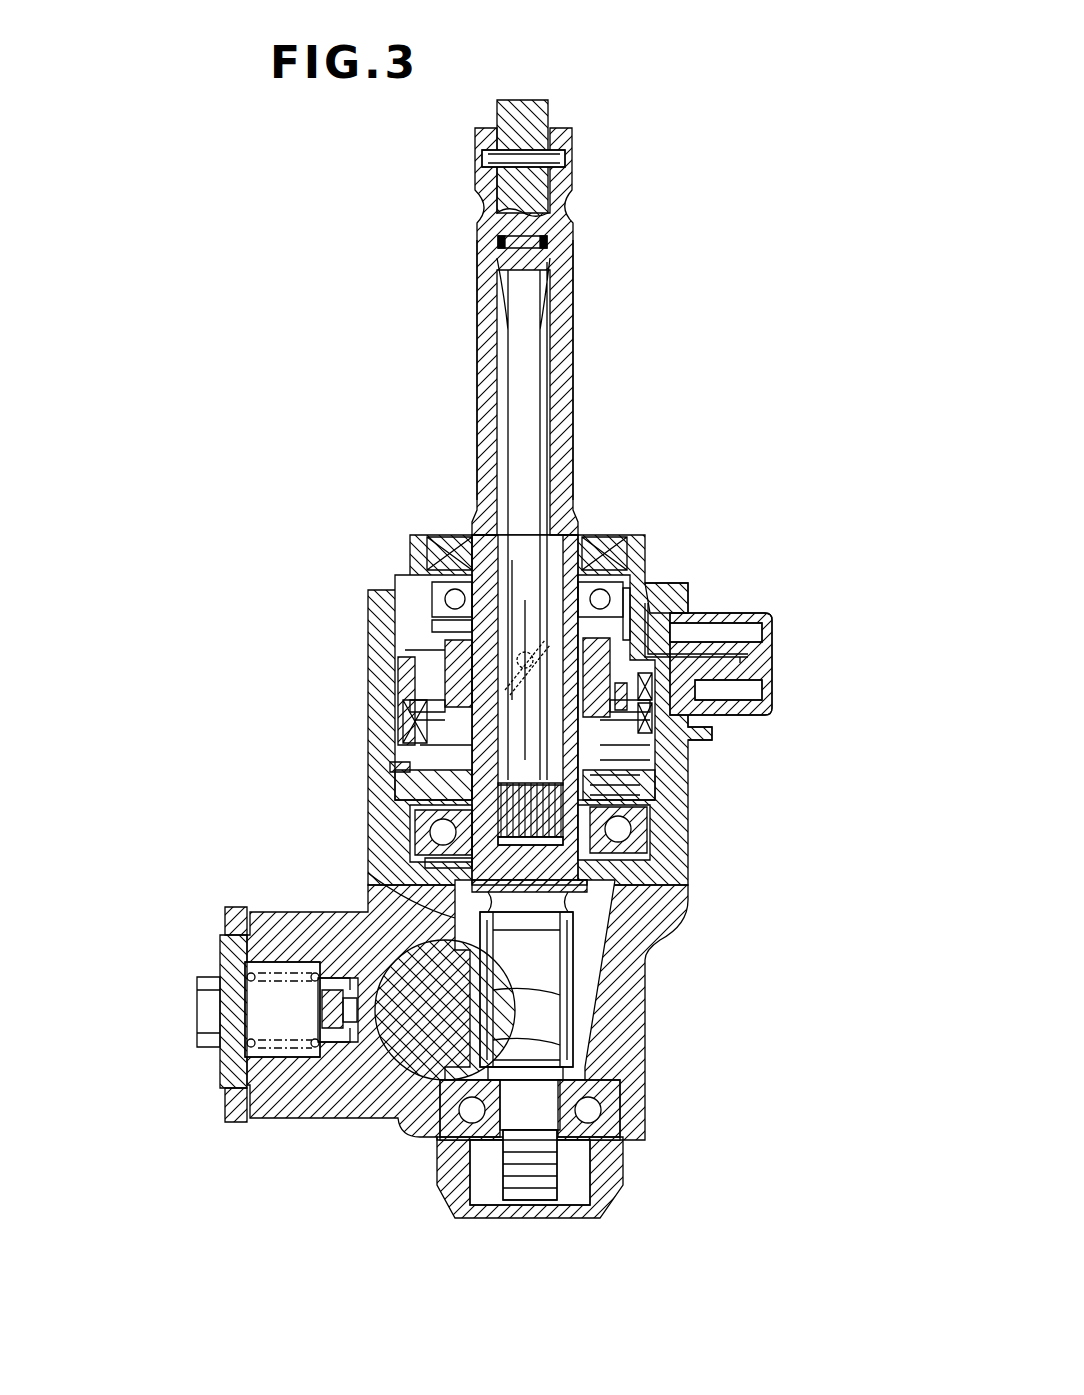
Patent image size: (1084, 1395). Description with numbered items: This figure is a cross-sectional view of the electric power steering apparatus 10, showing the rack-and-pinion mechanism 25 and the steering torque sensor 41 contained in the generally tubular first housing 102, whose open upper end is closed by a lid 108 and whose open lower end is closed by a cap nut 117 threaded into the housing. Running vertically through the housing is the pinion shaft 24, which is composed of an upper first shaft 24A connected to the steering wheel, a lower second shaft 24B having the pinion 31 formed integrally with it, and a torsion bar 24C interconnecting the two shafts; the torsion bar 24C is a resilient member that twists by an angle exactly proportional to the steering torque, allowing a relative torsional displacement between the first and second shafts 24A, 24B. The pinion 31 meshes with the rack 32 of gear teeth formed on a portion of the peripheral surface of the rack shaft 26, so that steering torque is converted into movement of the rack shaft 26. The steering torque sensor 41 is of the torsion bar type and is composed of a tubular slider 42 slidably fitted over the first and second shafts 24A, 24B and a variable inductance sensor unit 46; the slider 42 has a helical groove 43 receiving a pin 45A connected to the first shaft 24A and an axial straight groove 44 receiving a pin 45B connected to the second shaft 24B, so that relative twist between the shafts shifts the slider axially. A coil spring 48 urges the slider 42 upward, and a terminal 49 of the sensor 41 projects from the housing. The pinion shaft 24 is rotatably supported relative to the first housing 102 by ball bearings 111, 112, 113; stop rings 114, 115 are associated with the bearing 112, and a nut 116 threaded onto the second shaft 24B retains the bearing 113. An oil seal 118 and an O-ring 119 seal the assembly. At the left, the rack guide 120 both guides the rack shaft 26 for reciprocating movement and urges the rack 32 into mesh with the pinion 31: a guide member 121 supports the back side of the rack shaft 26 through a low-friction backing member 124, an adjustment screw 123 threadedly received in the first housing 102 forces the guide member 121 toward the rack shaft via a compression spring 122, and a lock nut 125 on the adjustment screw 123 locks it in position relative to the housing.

The electric power steering apparatus 10 is at (220, 232).
The pinion shaft 24 is at (583, 270).
The first shaft 24A is at (578, 300).
The torsion bar 24C is at (525, 370).
The helical groove 43 is at (530, 640).
The pin 45A is at (590, 612).
The oil seal 118 is at (622, 548).
The ball bearing 111 is at (612, 585).
The lid 108 is at (690, 598).
The terminal 49 is at (772, 663).
The axial straight groove 44 is at (737, 715).
The pin 45B is at (622, 760).
The coil spring 48 is at (630, 790).
The ball bearing 112 is at (600, 840).
The second shaft 24B is at (606, 873).
The first housing 102 is at (650, 922).
The rack shaft 26 is at (450, 992).
The pinion 31 is at (575, 1005).
The rack 32 is at (575, 1035).
The rack-and-pinion mechanism 25 is at (768, 1005).
The ball bearing 113 is at (600, 1112).
The nut 116 is at (485, 1195).
The cap nut 117 is at (555, 1185).
The backing member 124 is at (357, 1080).
The guide member 121 is at (310, 1080).
The compression spring 122 is at (267, 1112).
The lock nut 125 is at (223, 1118).
The adjustment screw 123 is at (220, 1060).
The rack guide 120 is at (192, 945).
The steering torque sensor 41 is at (230, 585).
The tubular slider 42 is at (455, 640).
The variable inductance sensor unit 46 is at (395, 680).
The O-ring 119 is at (390, 768).
The stop ring 114 is at (440, 818).
The stop ring 115 is at (460, 862).